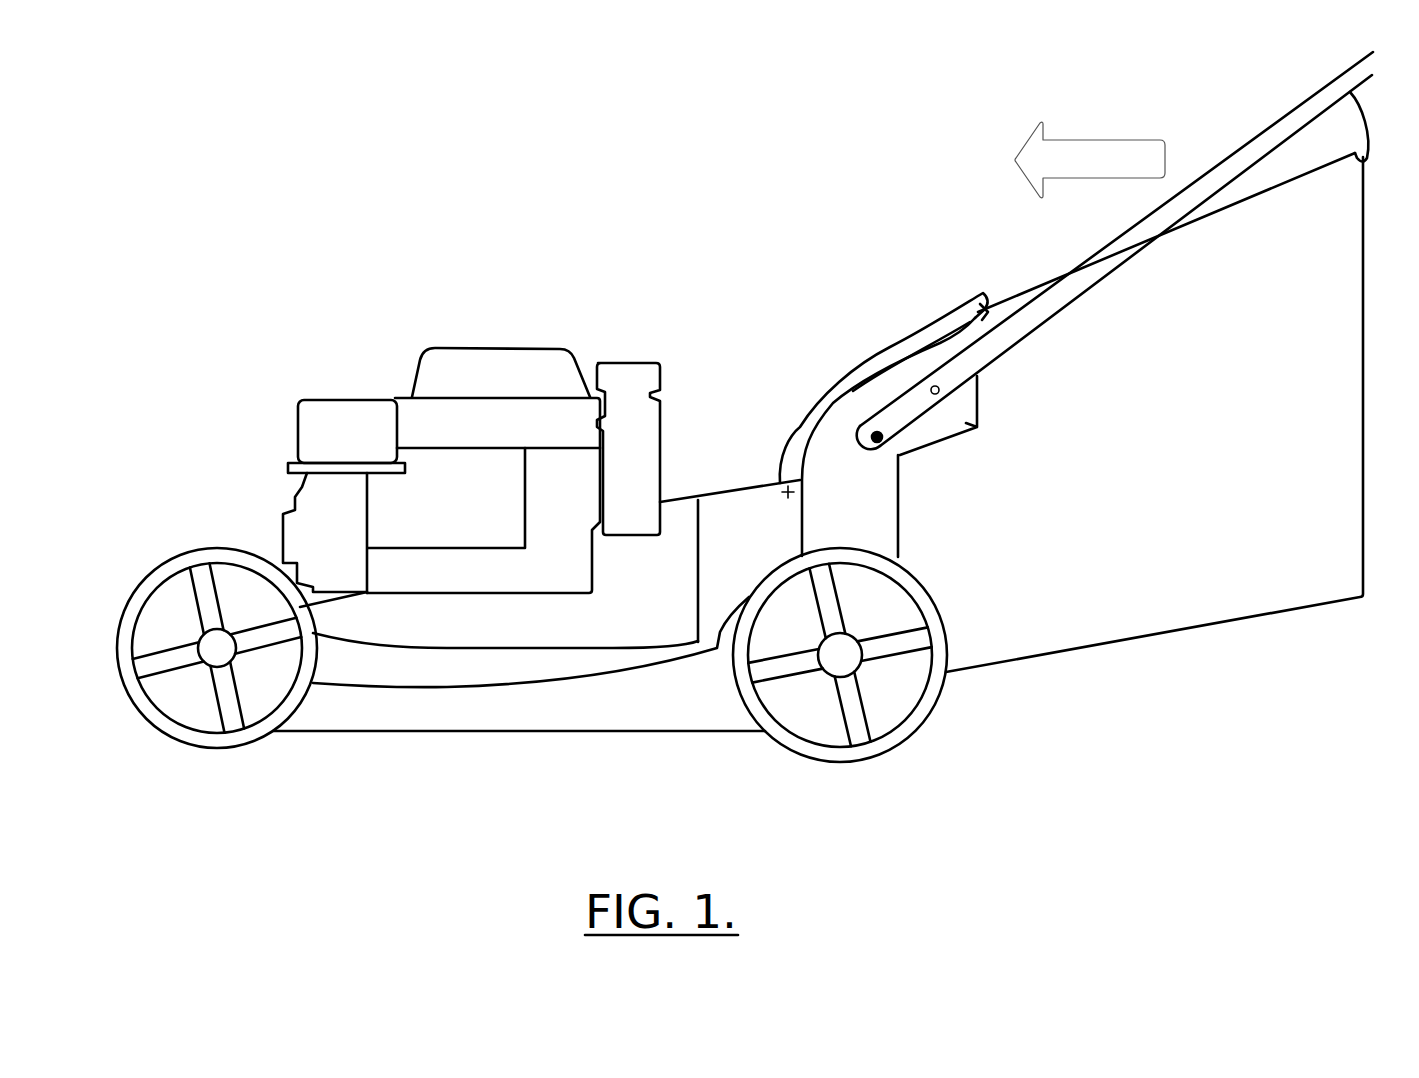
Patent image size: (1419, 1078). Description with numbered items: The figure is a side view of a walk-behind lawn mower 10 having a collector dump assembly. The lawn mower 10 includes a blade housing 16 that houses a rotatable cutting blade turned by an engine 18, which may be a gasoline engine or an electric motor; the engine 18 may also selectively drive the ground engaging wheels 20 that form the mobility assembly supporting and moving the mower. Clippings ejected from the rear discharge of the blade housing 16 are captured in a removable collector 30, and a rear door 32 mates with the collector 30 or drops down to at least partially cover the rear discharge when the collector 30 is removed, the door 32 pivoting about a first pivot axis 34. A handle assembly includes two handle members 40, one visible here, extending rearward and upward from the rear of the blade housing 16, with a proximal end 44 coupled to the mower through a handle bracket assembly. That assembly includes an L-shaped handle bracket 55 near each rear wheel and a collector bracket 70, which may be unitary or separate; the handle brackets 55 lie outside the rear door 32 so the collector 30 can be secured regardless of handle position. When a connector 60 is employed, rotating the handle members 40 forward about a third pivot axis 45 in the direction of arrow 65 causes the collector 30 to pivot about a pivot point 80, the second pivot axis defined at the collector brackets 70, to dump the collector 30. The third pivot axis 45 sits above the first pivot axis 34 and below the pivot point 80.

The walk-behind lawn mower 10 is at (219, 158).
The blade housing 16 is at (488, 713).
The engine 18 is at (432, 440).
The ground engaging wheels 20 is at (208, 742).
The collector 30 is at (1170, 610).
The rear door 32 is at (855, 373).
The first pivot axis 34 is at (785, 489).
The handle members 40 is at (1265, 133).
The proximal end 44 is at (900, 423).
The third pivot axis 45 is at (878, 437).
The handle bracket 55 is at (977, 427).
The connector 60 is at (1353, 153).
The arrow 65 is at (1100, 150).
The collector bracket 70 is at (945, 335).
The pivot point 80 is at (983, 300).